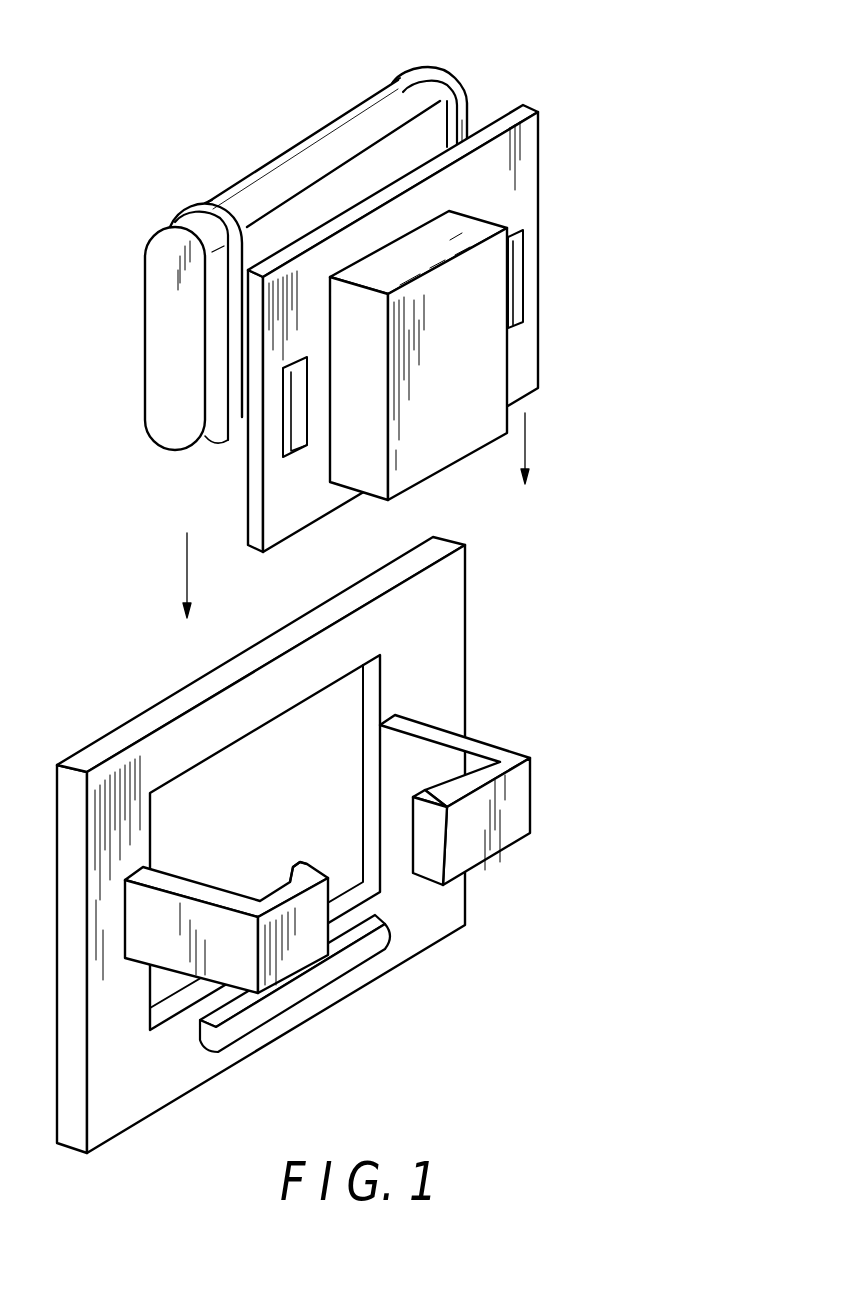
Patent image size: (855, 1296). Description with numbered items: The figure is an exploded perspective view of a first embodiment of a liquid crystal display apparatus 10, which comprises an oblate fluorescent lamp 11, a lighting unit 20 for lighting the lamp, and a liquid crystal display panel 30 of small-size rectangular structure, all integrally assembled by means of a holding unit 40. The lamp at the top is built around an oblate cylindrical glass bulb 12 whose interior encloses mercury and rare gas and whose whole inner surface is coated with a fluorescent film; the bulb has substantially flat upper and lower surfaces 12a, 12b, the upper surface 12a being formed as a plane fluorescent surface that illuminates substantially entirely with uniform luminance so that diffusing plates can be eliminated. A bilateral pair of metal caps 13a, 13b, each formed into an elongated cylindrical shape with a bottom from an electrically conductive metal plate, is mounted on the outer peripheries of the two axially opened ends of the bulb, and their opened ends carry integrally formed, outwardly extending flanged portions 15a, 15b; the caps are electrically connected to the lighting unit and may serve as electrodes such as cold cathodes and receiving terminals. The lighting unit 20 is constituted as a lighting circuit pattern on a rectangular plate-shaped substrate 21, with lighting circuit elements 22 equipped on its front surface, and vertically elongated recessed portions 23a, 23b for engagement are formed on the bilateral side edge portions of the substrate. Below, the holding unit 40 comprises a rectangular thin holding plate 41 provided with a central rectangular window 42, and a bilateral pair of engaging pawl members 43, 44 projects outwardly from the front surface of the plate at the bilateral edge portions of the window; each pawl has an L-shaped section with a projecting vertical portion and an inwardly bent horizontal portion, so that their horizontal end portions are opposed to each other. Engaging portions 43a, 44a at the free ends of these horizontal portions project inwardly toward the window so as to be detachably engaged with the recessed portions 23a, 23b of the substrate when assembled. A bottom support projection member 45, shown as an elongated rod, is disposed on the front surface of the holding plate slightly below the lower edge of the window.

The liquid crystal display apparatus 10 is at (114, 172).
The oblate fluorescent lamp 11 is at (288, 150).
The glass bulb 12 is at (258, 184).
The upper surface 12a is at (220, 190).
The lower surface 12b is at (363, 183).
The metal cap 13a is at (160, 340).
The metal cap 13b is at (470, 103).
The flanged portion 15a is at (172, 224).
The flanged portion 15b is at (450, 92).
The lighting unit 20 is at (538, 165).
The substrate 21 is at (520, 213).
The lighting circuit elements 22 is at (472, 403).
The recessed portion 23a is at (290, 420).
The recessed portion 23b is at (508, 298).
The liquid crystal display panel 30 is at (108, 697).
The holding unit 40 is at (472, 641).
The holding plate 41 is at (453, 583).
The window 42 is at (283, 826).
The engaging pawl member 43 is at (293, 960).
The engaging portion 43a is at (288, 872).
The engaging pawl member 44 is at (508, 828).
The engaging portion 44a is at (435, 797).
The bottom support projection member 45 is at (365, 953).